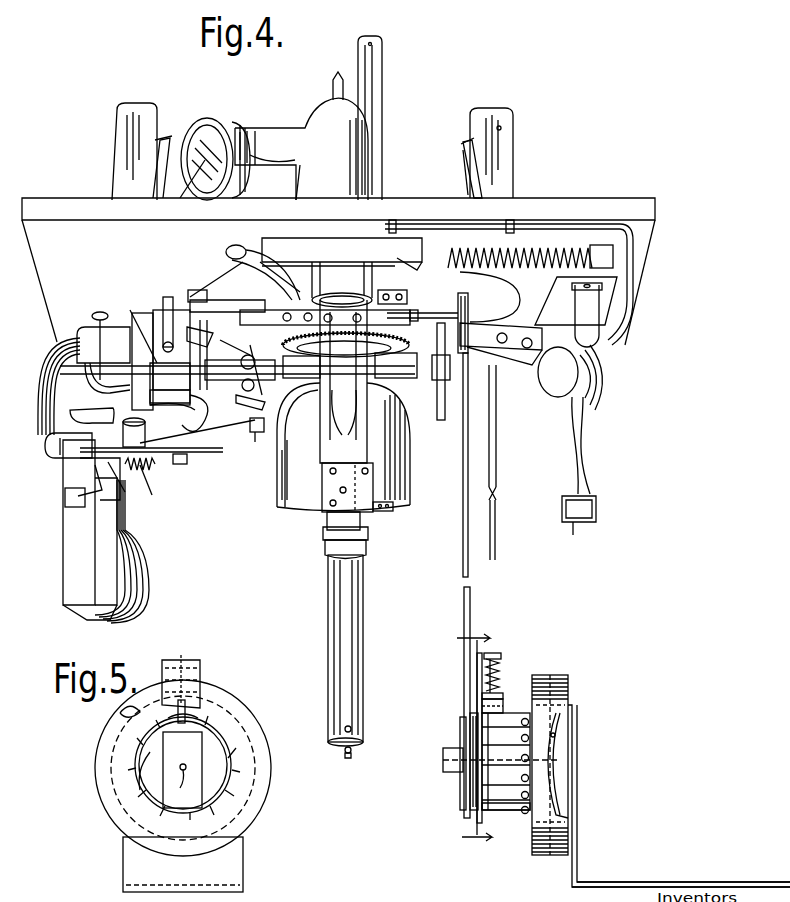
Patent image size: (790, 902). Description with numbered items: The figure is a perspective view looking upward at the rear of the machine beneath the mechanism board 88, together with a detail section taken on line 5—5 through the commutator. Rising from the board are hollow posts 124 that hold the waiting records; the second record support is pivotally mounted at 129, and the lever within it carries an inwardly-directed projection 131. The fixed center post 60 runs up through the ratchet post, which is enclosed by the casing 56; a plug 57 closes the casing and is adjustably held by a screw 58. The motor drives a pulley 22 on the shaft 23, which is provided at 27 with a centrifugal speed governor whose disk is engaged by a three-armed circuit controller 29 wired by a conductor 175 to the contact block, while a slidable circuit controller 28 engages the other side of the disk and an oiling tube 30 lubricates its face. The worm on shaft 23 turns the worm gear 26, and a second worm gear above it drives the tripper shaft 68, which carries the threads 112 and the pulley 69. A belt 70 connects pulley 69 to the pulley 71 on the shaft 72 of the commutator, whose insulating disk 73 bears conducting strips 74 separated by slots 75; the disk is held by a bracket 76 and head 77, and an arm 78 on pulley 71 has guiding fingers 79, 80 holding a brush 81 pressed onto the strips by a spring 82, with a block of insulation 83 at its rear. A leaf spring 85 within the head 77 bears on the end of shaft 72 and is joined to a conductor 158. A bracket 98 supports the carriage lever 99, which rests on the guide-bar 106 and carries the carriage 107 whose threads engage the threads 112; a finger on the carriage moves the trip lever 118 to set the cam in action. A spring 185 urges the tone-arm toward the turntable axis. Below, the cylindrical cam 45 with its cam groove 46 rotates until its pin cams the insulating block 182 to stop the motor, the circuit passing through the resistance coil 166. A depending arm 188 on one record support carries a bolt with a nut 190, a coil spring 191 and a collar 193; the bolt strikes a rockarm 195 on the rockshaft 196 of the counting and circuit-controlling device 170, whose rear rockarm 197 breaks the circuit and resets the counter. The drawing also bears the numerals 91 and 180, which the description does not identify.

In FIG. 4, the mechanism board 88 is at (60, 212).
In FIG. 4, the posts 124 is at (116, 152).
In FIG. 4, the inwardly-directed projection 131 is at (170, 140).
In FIG. 4, the pivot of support 129 is at (198, 125).
In FIG. 4, the motor housing 91 is at (297, 118).
In FIG. 4, the center post 60 is at (333, 76).
In FIG. 4, the spring 185 is at (548, 258).
In FIG. 4, the bracket 98 is at (263, 262).
In FIG. 4, the carriage lever 99 is at (238, 262).
In FIG. 4, the guide-bar 106 is at (207, 280).
In FIG. 4, the trip lever 118 is at (178, 297).
In FIG. 4, the slidable circuit controller 28 is at (150, 315).
In FIG. 4, the carriage 107 is at (325, 305).
In FIG. 4, the tube 30 is at (200, 358).
In FIG. 4, the threads 112 is at (238, 364).
In FIG. 4, the worm gear 26 is at (330, 339).
In FIG. 4, the tripper shaft 68 is at (423, 312).
In FIG. 4, the pulley 69 is at (486, 318).
In FIG. 4, the pulley 22 is at (440, 420).
In FIG. 4, the shaft 23 is at (425, 440).
In FIG. 4, the belt 70 is at (463, 546).
In FIG. 4, the resistance coil 166 is at (555, 385).
In FIG. 4, the cam groove 46 is at (318, 410).
In FIG. 4, the cylindrical cam 45 is at (300, 490).
In FIG. 4, the bracket 180 is at (355, 493).
In FIG. 4, the insulating block 182 is at (393, 506).
In FIG. 4, the casing 56 is at (352, 628).
In FIG. 4, the screw 58 is at (352, 727).
In FIG. 4, the plug 57 is at (355, 752).
In FIG. 4, the depending arm 188 is at (42, 408).
In FIG. 4, the conductor 175 is at (165, 421).
In FIG. 4, the circuit controller 29 is at (256, 435).
In FIG. 4, the centrifugal speed governor 27 is at (257, 378).
In FIG. 4, the nut 190 is at (185, 462).
In FIG. 4, the collar 193 is at (152, 468).
In FIG. 4, the rockshaft 196 is at (78, 458).
In FIG. 4, the rockarm 197 is at (92, 470).
In FIG. 4, the rockarm 195 is at (120, 490).
In FIG. 4, the coil spring 191 is at (152, 478).
In FIG. 4, the counting and circuit-controlling device 170 is at (68, 535).
In FIG. 4, the section line 5 is at (474, 742).
In FIG. 4, the arm 78 is at (477, 686).
In FIG. 5, the arm 78 is at (200, 682).
In FIG. 4, the guiding finger 79 is at (500, 660).
In FIG. 4, the spring 82 is at (500, 672).
In FIG. 4, the guiding finger 80 is at (505, 694).
In FIG. 4, the brush 81 is at (509, 702).
In FIG. 5, the brush 81 is at (187, 712).
In FIG. 4, the pulley 71 is at (460, 730).
In FIG. 4, the shaft 72 is at (443, 762).
In FIG. 5, the shaft 72 is at (182, 770).
In FIG. 4, the conducting strips 74 is at (488, 795).
In FIG. 5, the conducting strips 74 is at (228, 790).
In FIG. 4, the head 77 is at (550, 852).
In FIG. 5, the head 77 is at (245, 822).
In FIG. 4, the leaf spring 85 is at (560, 750).
In FIG. 4, the conductor 158 is at (537, 727).
In FIG. 4, the bracket 76 is at (612, 884).
In FIG. 5, the bracket 76 is at (232, 870).
In FIG. 5, the disk 73 is at (220, 740).
In FIG. 5, the block of insulation 83 is at (130, 715).
In FIG. 5, the slots 75 is at (142, 786).